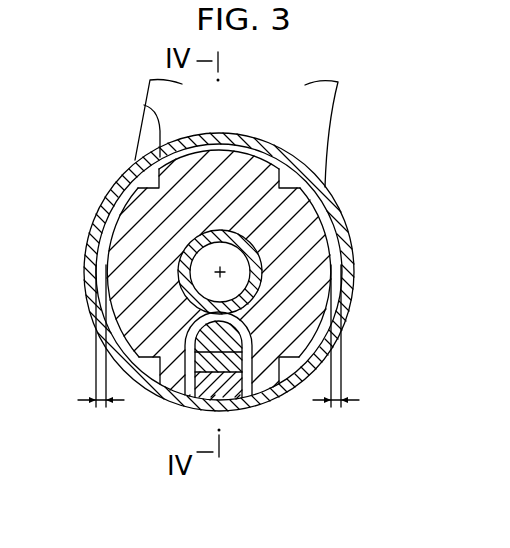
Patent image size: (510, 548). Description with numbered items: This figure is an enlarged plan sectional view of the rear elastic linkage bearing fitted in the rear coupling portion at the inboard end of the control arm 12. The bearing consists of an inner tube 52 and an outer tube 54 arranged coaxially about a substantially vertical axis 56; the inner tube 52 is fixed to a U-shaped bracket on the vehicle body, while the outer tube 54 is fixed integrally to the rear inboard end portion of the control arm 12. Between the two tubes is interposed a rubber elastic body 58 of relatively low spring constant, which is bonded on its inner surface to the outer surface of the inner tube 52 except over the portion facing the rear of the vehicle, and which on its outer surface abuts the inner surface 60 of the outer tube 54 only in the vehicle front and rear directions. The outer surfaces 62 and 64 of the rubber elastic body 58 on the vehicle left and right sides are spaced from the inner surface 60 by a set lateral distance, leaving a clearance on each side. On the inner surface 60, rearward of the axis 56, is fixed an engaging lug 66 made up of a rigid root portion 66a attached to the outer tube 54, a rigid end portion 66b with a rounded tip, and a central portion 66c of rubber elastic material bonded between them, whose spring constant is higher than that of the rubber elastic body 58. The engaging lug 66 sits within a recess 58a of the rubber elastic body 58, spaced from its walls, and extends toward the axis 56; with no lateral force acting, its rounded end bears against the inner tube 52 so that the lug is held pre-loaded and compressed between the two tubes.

The control arm 12 is at (333, 118).
The inner tube 52 is at (296, 267).
The outer tube 54 is at (144, 105).
The axis 56 is at (213, 264).
The rubber elastic body 58 is at (287, 208).
The recess 58a is at (185, 336).
The inner surface of the outer tube 60 is at (343, 291).
The outer surface of the rubber elastic body (vehicle left side) 62 is at (130, 200).
The outer surface of the rubber elastic body (vehicle right side) 64 is at (326, 228).
The engaging lug 66 is at (258, 380).
The root portion 66a is at (232, 385).
The end portion 66b is at (194, 356).
The central portion 66c is at (181, 385).